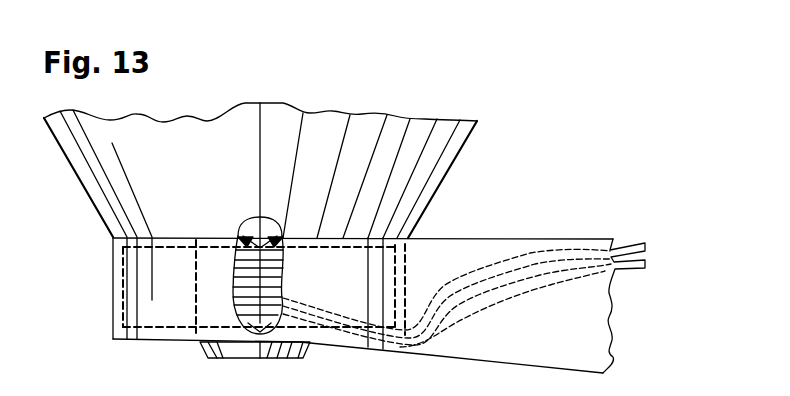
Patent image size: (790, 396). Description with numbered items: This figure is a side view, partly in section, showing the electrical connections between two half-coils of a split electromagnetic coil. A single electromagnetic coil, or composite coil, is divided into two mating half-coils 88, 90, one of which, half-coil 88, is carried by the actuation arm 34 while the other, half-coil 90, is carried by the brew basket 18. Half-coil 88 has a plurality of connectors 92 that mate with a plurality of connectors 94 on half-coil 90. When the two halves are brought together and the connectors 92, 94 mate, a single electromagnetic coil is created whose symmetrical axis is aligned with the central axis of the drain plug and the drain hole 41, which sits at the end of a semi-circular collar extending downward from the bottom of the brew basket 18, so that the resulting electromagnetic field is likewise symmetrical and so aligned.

The brew basket 18 is at (393, 127).
The actuation arm 34 is at (513, 247).
The drain hole 41 is at (236, 358).
The half-coil 88 is at (380, 270).
The half-coil 90 is at (196, 288).
The connectors 92 is at (283, 265).
The connectors 94 is at (232, 229).